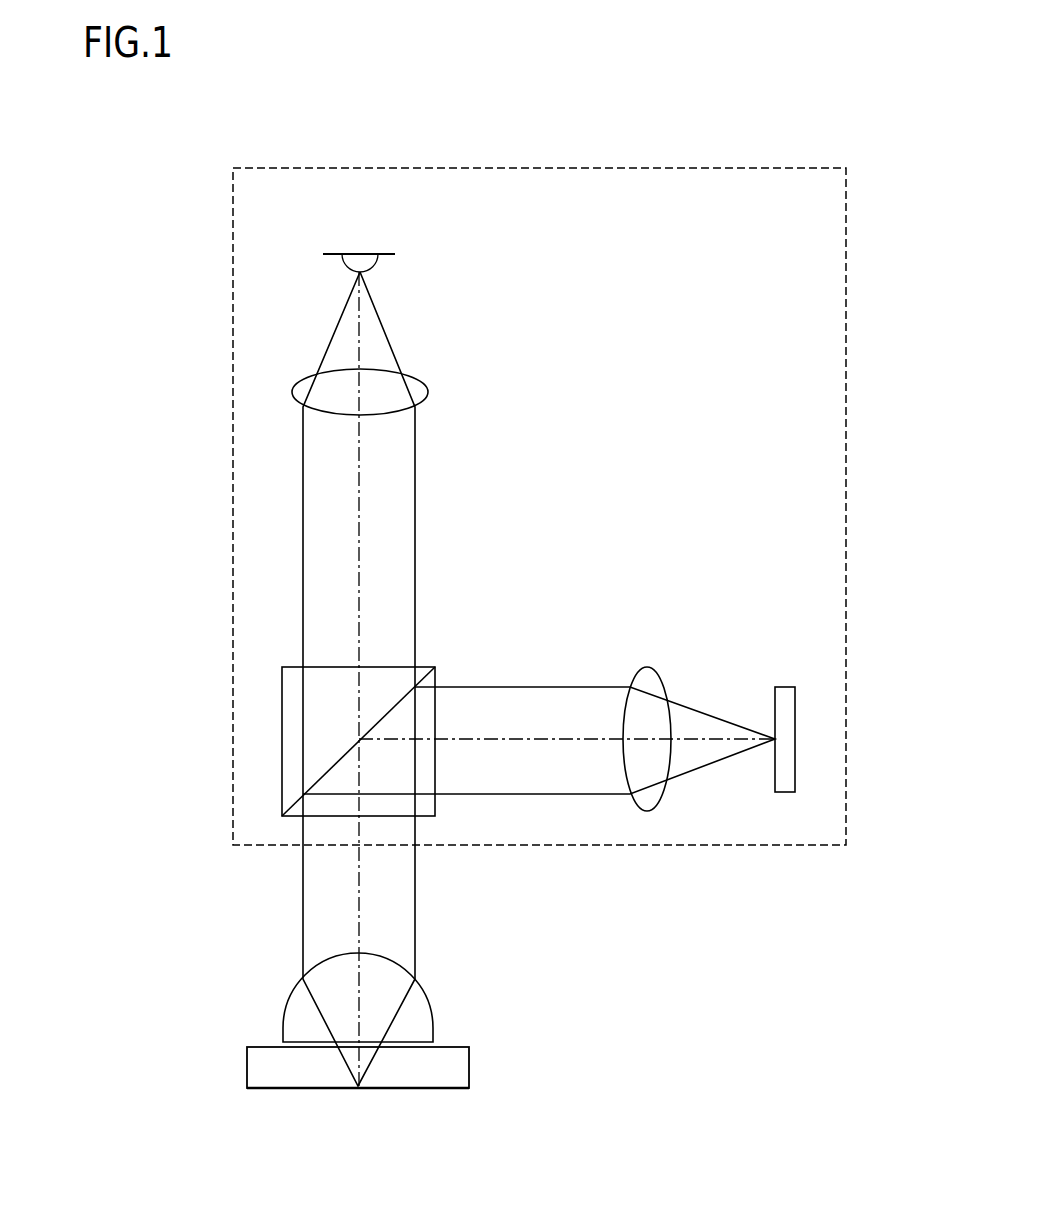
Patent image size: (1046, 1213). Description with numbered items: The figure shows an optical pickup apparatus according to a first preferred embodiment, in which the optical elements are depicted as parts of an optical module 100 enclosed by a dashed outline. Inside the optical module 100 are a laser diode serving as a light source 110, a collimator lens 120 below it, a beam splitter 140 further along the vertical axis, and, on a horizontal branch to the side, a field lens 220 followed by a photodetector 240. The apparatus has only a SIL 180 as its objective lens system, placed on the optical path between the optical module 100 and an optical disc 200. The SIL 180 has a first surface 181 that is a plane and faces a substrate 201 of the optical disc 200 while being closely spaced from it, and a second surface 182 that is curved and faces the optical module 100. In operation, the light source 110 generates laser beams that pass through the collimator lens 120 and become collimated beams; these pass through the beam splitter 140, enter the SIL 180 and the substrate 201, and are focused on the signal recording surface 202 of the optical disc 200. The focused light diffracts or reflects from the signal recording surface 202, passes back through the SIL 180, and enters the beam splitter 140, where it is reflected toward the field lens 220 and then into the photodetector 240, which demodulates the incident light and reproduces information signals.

The optical module 100 is at (846, 270).
The light source 110 is at (377, 226).
The collimator lens 120 is at (392, 436).
The beam splitter 140 is at (387, 705).
The SIL 180 is at (377, 983).
The first surface 181 is at (261, 988).
The second surface 182 is at (466, 957).
The optical disc 200 is at (363, 1104).
The substrate 201 is at (197, 1058).
The signal recording surface 202 is at (244, 1126).
The field lens 220 is at (673, 707).
The photodetector 240 is at (786, 698).